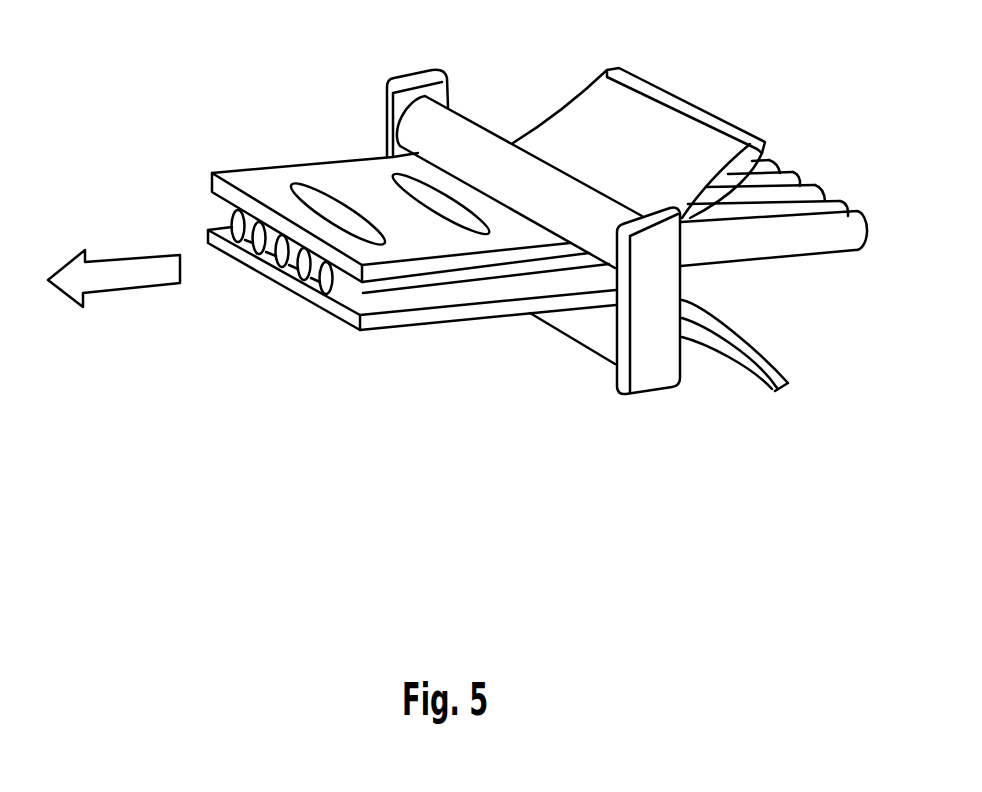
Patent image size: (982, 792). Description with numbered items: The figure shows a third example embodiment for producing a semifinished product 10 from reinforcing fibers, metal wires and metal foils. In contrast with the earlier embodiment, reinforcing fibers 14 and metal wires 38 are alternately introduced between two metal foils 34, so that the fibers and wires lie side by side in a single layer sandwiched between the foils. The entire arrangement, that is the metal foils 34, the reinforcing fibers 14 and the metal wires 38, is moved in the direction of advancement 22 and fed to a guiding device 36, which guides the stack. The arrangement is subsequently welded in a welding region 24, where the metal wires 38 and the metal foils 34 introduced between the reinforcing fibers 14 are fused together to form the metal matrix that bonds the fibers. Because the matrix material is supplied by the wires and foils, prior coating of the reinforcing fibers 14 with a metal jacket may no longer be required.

The semifinished product 10 is at (260, 158).
The reinforcing fibers 14 is at (230, 216).
The direction of advancement 22 is at (68, 297).
The welding region 24 is at (402, 178).
The metal foils 34 is at (680, 123).
The guiding device 36 is at (643, 372).
The metal wires 38 is at (255, 253).